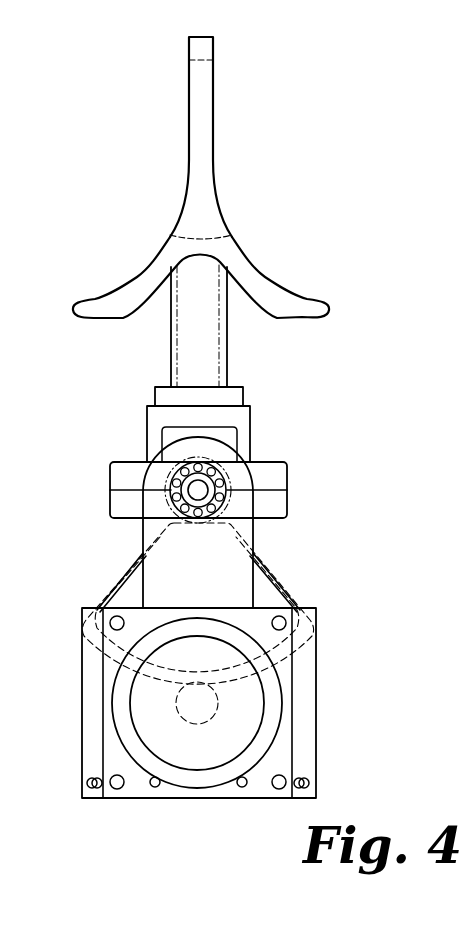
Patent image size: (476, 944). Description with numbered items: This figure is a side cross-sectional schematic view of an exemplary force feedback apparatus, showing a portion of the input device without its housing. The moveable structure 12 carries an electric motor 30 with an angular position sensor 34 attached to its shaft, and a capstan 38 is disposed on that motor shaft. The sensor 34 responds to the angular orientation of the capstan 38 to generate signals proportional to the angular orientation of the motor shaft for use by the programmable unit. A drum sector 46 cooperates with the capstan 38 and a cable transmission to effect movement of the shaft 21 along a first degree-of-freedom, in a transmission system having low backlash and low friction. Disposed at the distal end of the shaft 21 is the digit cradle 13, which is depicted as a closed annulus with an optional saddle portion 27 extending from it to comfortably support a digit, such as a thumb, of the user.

The moveable structure 12 is at (352, 368).
The digit cradle 13 is at (213, 68).
The saddle portion 27 is at (117, 293).
The shaft 21 is at (230, 350).
The drum sector 46 is at (276, 582).
The electric motor 30 is at (118, 732).
The angular position sensor 34 is at (250, 730).
The capstan 38 is at (222, 703).